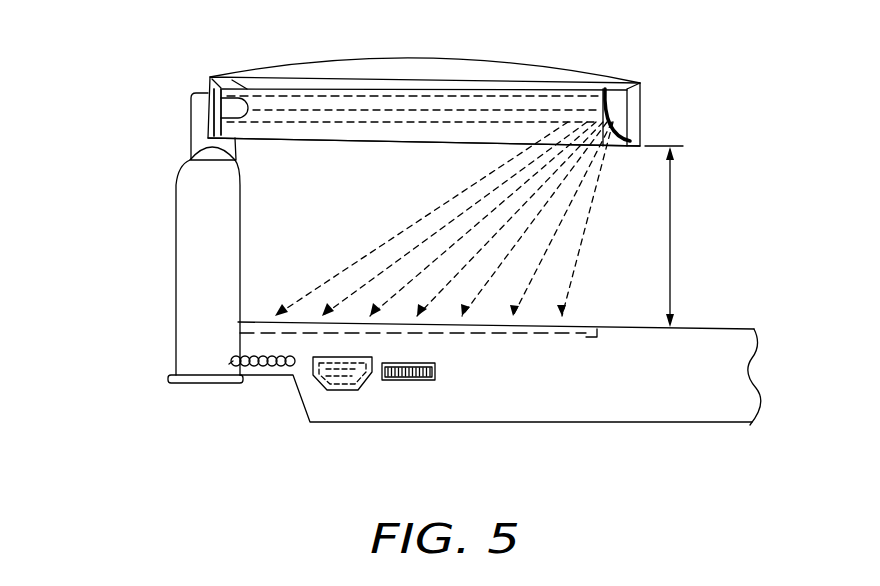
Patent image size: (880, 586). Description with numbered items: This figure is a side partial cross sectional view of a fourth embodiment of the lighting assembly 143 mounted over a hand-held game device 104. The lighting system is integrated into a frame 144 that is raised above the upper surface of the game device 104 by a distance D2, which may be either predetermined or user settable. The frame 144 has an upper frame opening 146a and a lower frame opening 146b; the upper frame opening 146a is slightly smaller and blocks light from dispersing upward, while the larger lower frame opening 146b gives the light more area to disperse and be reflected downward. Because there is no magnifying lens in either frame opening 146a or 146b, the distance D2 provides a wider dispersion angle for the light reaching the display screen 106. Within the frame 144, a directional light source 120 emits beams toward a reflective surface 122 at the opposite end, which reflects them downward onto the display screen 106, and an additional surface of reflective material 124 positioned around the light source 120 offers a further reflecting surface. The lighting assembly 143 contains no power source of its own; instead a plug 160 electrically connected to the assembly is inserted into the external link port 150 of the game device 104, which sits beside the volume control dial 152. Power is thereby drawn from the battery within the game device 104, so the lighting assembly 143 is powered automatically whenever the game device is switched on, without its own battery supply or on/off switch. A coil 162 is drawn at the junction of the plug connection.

The game device 104 is at (698, 406).
The display screen 106 is at (588, 330).
The directional light source 120 is at (220, 103).
The reflective surface 122 is at (630, 108).
The reflective material 124 is at (213, 120).
The lighting assembly 143 is at (183, 290).
The frame 144 is at (643, 95).
The upper frame opening 146a is at (262, 75).
The lower frame opening 146b is at (237, 140).
The link port 150 is at (363, 393).
The volume control dial 152 is at (435, 380).
The plug 160 is at (325, 382).
The spring 162 is at (260, 372).
The distance D2 is at (673, 236).